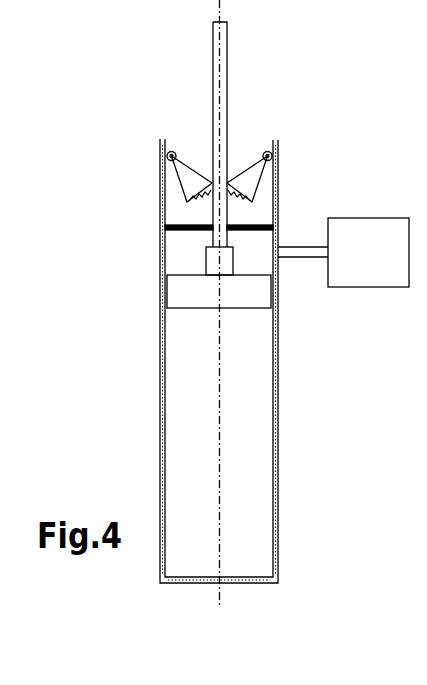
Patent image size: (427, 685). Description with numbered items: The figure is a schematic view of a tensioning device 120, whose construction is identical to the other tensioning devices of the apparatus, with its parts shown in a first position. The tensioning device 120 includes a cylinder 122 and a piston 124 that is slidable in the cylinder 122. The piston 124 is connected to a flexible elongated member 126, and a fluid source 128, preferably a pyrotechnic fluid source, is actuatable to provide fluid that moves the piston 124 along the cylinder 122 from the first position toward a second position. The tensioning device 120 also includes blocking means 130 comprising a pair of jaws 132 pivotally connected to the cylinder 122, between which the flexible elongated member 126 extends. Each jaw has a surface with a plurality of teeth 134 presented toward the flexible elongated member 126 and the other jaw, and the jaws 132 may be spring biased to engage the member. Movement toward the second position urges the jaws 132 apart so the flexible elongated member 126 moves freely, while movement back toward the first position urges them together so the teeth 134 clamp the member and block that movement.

The tensioning device 120 is at (104, 174).
The cylinder 122 is at (253, 473).
The piston 124 is at (185, 290).
The flexible elongated member 126 is at (218, 50).
The fluid source 128 is at (373, 268).
The blocking means 130 is at (296, 165).
The jaws 132 is at (185, 170).
The teeth 134 is at (252, 201).